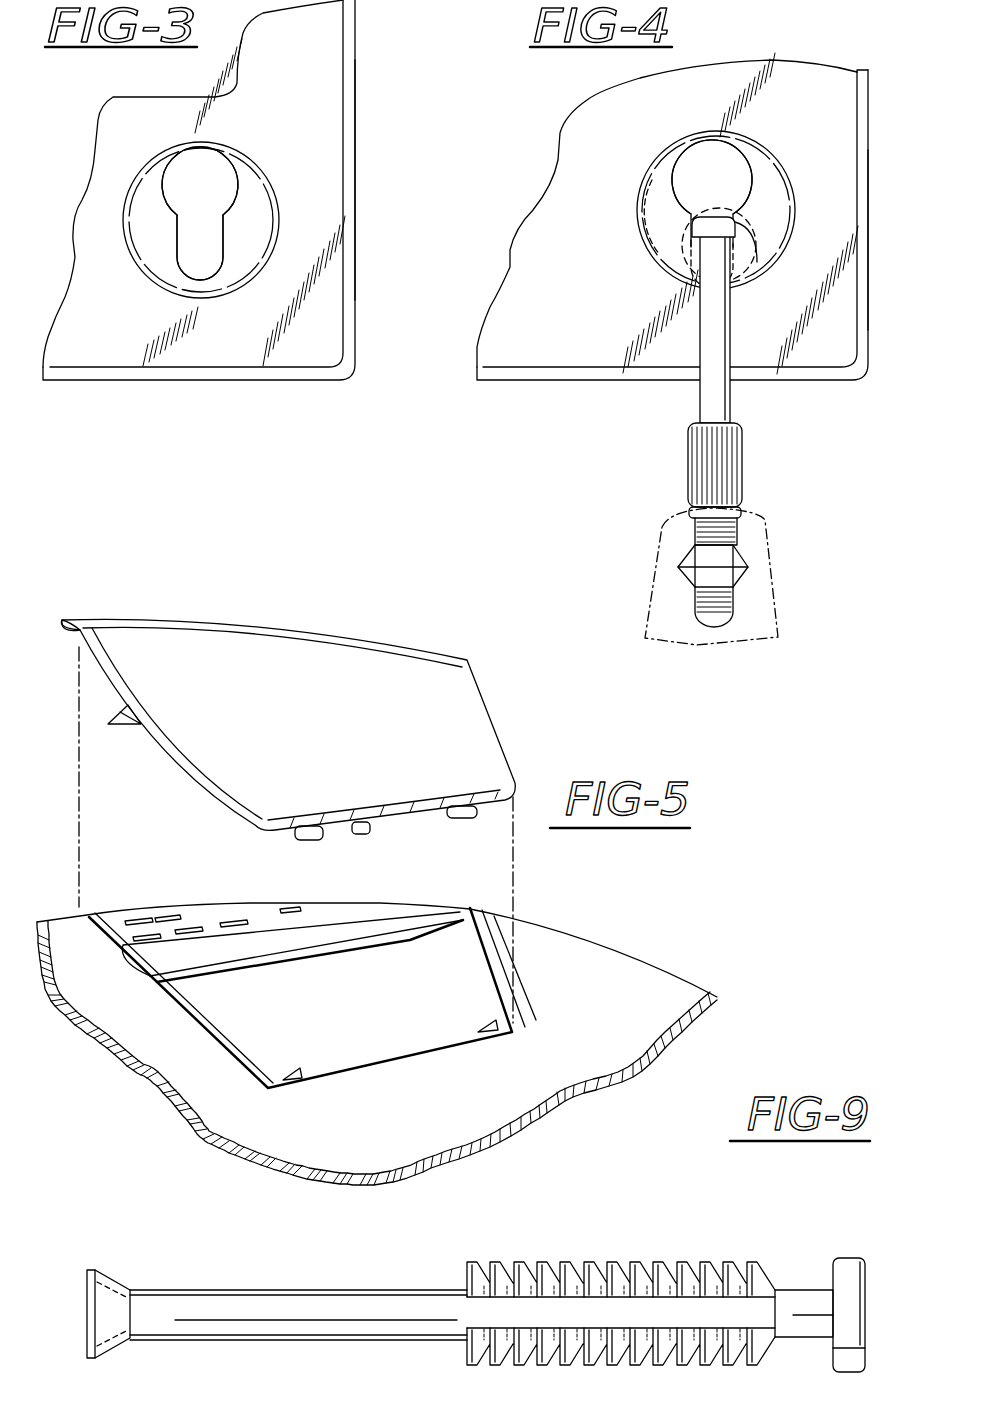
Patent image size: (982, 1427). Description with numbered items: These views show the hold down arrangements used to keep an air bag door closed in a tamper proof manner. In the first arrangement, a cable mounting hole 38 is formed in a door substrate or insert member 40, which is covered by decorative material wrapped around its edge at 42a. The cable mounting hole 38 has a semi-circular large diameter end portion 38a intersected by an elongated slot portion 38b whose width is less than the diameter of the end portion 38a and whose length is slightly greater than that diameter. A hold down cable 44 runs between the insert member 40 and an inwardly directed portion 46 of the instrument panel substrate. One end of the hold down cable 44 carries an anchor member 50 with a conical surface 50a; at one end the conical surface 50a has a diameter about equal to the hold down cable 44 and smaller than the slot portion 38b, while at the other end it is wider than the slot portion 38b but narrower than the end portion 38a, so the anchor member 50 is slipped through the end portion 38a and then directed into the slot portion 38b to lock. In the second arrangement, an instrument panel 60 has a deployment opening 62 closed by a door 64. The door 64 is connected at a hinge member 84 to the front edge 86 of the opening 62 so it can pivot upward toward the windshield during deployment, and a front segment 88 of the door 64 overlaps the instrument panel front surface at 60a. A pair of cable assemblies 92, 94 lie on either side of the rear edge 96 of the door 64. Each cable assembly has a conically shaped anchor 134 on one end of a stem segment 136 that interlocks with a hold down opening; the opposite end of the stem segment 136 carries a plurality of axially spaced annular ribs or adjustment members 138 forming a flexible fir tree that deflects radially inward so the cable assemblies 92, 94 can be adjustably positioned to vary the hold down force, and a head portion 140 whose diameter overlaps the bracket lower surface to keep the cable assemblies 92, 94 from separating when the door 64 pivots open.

In FIG. 3, the cable mounting hole 38 is at (235, 160).
In FIG. 4, the cable mounting hole 38 is at (747, 157).
In FIG. 3, the large diameter end portion 38a is at (172, 180).
In FIG. 4, the large diameter end portion 38a is at (680, 152).
In FIG. 3, the elongated slot portion 38b is at (213, 248).
In FIG. 4, the elongated slot portion 38b is at (693, 263).
In FIG. 3, the insert member 40 is at (287, 220).
In FIG. 4, the insert member 40 is at (808, 150).
In FIG. 3, the edge of decorative material 42a is at (352, 130).
In FIG. 4, the edge of decorative material 42a is at (863, 293).
In FIG. 4, the hold down cable 44 is at (725, 393).
In FIG. 4, the inwardly directed portion 46 is at (662, 523).
In FIG. 4, the anchor member 50 is at (723, 203).
In FIG. 4, the conical surface 50a is at (745, 266).
In FIG. 5, the instrument panel 60 is at (530, 980).
In FIG. 5, the front surface of instrument panel 60a is at (160, 938).
In FIG. 5, the deployment opening 62 is at (367, 1028).
In FIG. 5, the door 64 is at (432, 695).
In FIG. 5, the hinge member 84 is at (128, 726).
In FIG. 5, the front edge of opening 86 is at (290, 950).
In FIG. 5, the front segment of door 88 is at (230, 667).
In FIG. 5, the cable assembly 92 is at (287, 1067).
In FIG. 9, the cable assembly 92 is at (418, 1290).
In FIG. 5, the cable assembly 94 is at (483, 1023).
In FIG. 5, the rear edge of door 96 is at (368, 822).
In FIG. 9, the conically shaped anchor 134 is at (120, 1283).
In FIG. 9, the stem segment 136 is at (280, 1305).
In FIG. 9, the annular ribs or adjustment members 138 is at (503, 1260).
In FIG. 9, the head portion 140 is at (857, 1258).